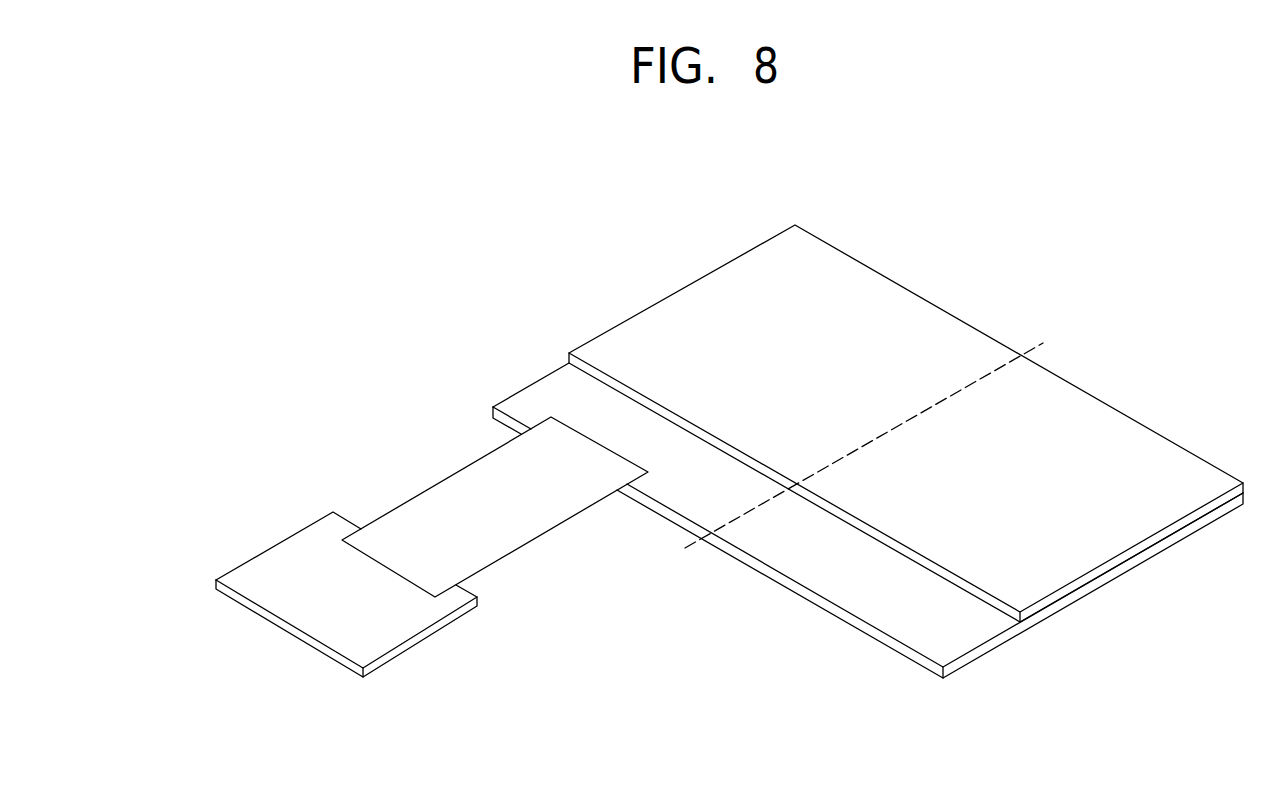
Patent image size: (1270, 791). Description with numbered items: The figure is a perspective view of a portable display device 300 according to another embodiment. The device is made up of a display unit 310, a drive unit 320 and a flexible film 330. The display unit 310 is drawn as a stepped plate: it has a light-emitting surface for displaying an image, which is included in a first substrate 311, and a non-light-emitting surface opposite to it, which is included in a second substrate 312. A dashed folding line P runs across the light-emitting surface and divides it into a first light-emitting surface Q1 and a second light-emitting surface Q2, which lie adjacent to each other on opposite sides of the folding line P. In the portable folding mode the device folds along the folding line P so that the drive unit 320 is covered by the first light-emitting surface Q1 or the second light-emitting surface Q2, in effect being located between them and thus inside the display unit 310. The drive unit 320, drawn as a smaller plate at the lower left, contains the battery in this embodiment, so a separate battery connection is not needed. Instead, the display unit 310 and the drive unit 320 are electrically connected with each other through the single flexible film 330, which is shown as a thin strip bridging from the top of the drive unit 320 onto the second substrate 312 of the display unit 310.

The portable display device 300 is at (1066, 232).
The display unit 310 is at (608, 249).
The first substrate 311 is at (627, 332).
The second substrate 312 is at (533, 400).
The drive unit 320 is at (292, 560).
The flexible film 330 is at (450, 500).
The folding line P is at (872, 434).
The first light-emitting surface Q1 is at (893, 294).
The second light-emitting surface Q2 is at (1137, 436).